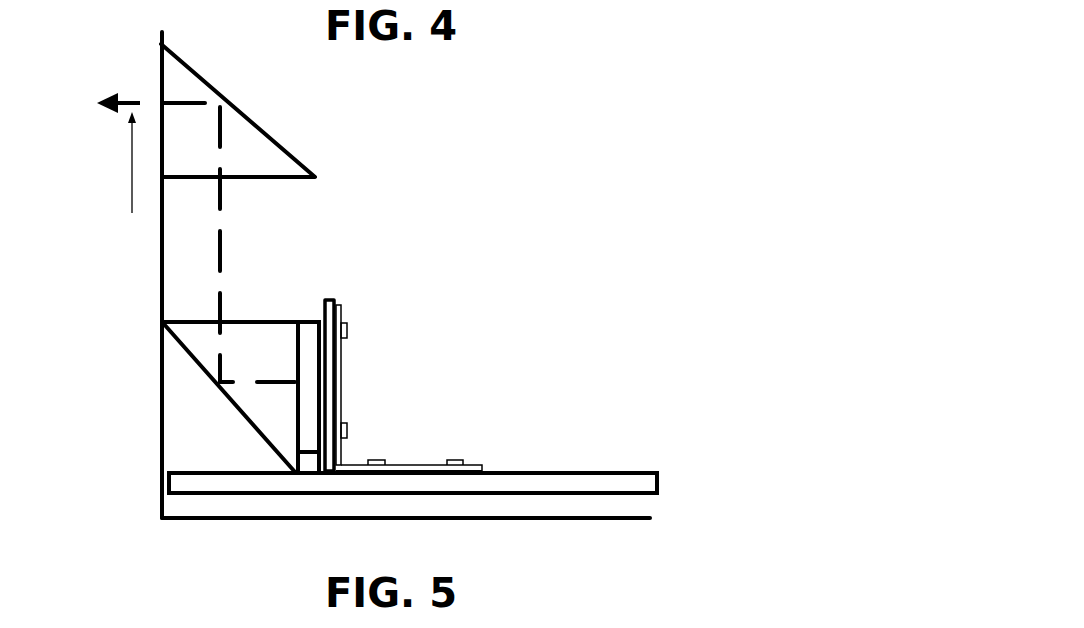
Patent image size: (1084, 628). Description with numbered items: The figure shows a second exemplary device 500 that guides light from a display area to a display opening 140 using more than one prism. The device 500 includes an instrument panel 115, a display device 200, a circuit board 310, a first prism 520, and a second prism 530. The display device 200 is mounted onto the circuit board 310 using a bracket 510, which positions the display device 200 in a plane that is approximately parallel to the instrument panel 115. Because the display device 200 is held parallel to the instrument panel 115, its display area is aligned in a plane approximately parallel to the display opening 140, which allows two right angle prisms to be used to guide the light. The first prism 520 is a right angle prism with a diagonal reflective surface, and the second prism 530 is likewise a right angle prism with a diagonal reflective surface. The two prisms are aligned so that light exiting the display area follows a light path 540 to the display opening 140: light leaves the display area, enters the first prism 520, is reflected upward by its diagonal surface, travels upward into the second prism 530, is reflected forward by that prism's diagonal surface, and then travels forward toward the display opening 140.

The device 500 is at (134, 22).
The display opening 140 is at (150, 50).
The second prism 530 is at (152, 72).
The light path 540 is at (196, 237).
The instrument panel 115 is at (150, 286).
The first prism 520 is at (214, 396).
The bracket 510 is at (356, 377).
The display device 200 is at (342, 432).
The circuit board 310 is at (670, 483).